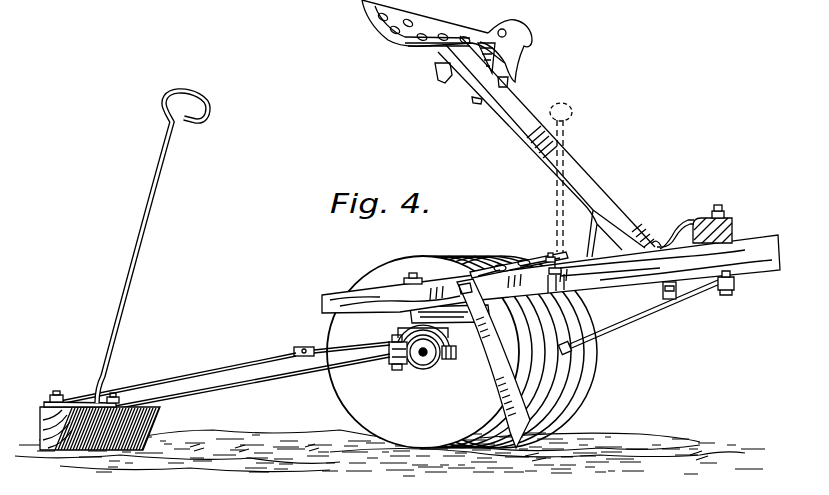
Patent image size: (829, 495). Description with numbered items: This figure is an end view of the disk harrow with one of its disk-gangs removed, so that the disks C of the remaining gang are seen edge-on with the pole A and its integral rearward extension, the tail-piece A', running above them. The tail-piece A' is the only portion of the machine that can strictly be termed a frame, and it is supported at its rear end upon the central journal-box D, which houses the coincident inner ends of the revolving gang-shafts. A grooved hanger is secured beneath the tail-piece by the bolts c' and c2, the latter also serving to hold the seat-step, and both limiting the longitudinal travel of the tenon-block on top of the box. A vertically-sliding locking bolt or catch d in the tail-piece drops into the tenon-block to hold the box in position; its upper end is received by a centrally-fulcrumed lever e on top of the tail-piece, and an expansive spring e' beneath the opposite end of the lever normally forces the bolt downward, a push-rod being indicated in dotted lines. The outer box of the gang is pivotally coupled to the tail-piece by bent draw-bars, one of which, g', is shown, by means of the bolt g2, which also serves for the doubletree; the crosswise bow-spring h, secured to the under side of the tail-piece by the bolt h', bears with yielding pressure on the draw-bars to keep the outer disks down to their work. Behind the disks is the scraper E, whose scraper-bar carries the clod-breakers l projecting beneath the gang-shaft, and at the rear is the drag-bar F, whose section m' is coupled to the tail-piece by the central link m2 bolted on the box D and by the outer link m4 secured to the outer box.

The pole A is at (640, 268).
The tail-piece A' is at (547, 274).
The disks C is at (469, 352).
The journal-box D is at (426, 358).
The scraper E is at (342, 342).
The drag-bar F is at (100, 410).
The bolt c' is at (413, 259).
The bolt c2 is at (508, 128).
The locking bolt or catch d is at (497, 264).
The lever e is at (545, 247).
The expansive spring e' is at (550, 277).
The draw-bar g' is at (646, 313).
The bolt g2 is at (720, 220).
The bow-spring h is at (659, 294).
The bolt h' is at (673, 233).
The clod-breakers l is at (377, 362).
The drag-bar section m' is at (117, 429).
The central link m2 is at (175, 379).
The link m4 is at (252, 381).